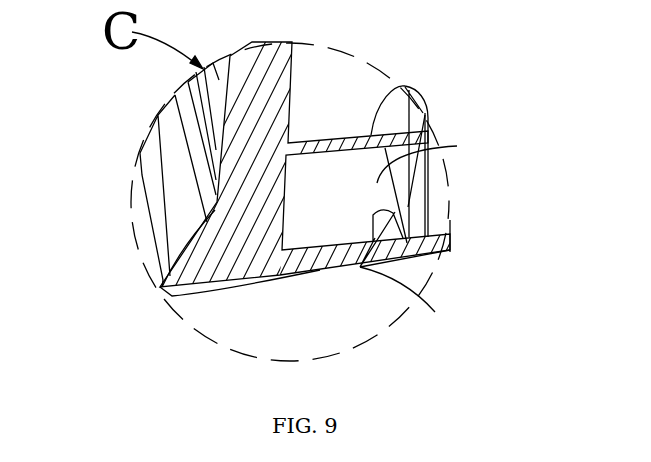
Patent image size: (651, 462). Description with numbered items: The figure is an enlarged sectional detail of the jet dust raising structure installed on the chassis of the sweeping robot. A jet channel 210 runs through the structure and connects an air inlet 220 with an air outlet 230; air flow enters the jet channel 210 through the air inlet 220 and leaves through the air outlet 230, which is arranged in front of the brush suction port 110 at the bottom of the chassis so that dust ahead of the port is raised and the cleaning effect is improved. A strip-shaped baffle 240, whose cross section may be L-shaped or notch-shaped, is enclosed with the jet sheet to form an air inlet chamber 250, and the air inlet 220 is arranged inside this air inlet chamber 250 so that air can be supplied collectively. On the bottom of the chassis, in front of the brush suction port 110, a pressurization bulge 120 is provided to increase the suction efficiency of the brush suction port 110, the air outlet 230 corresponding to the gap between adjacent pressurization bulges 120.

The brush suction port 110 is at (152, 262).
The pressurization bulge 120 is at (168, 293).
The jet channel 210 is at (432, 247).
The air inlet 220 is at (405, 204).
The air outlet 230 is at (440, 263).
The baffle 240 is at (432, 126).
The air inlet chamber 250 is at (404, 88).